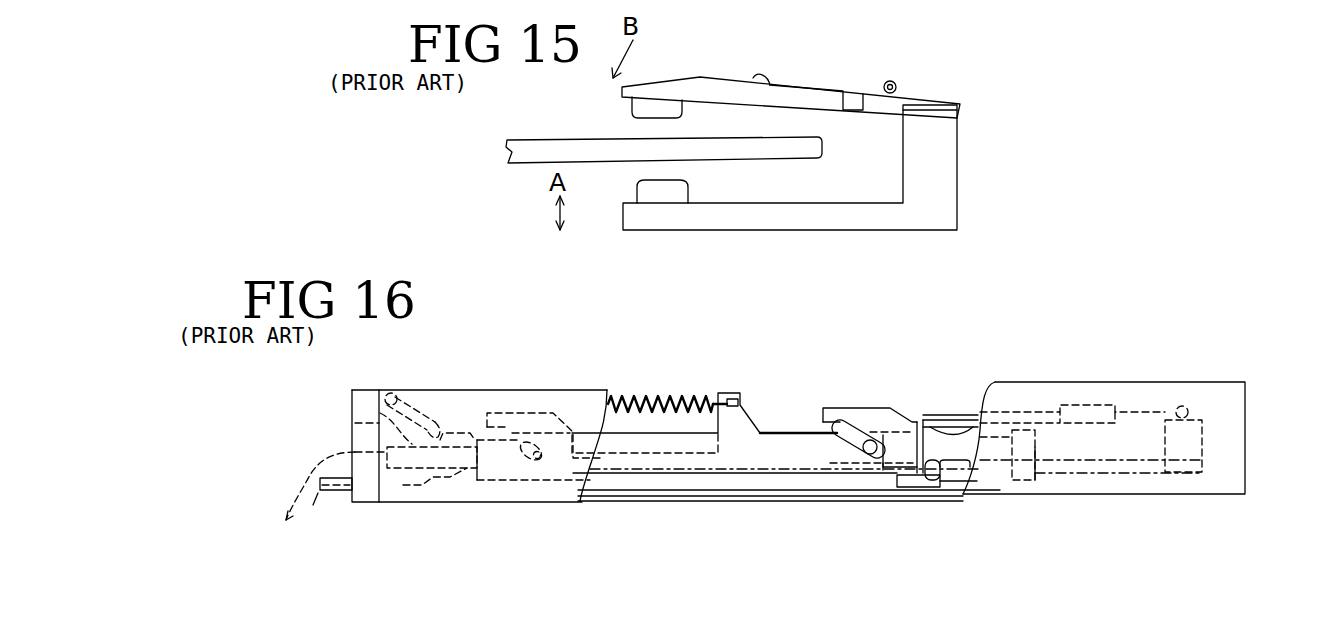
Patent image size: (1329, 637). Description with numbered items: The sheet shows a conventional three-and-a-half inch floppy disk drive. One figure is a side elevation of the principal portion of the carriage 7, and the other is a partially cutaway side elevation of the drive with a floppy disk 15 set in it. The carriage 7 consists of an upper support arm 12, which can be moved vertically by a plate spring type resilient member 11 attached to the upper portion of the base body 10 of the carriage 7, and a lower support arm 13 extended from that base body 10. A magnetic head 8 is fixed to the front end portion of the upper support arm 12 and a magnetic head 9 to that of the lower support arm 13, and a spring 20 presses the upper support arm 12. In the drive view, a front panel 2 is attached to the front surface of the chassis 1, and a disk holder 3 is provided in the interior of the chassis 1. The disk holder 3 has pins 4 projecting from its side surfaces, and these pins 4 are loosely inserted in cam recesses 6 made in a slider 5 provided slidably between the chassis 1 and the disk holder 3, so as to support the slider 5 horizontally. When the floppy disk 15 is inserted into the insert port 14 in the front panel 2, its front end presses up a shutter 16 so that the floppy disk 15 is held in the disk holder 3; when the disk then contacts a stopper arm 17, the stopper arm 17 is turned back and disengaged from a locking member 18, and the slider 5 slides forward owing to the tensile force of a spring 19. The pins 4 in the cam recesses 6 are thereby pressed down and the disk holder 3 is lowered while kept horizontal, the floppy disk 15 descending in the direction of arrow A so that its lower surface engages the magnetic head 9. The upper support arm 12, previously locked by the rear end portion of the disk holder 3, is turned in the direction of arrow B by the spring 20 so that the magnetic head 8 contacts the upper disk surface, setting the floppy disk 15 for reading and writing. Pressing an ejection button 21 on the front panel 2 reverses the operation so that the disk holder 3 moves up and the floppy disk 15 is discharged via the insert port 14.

In FIG. 16, the chassis 1 is at (1210, 381).
In FIG. 16, the front panel 2 is at (350, 494).
In FIG. 16, the disk holder 3 is at (676, 430).
In FIG. 16, the pins 4 is at (517, 440).
In FIG. 16, the slider 5 is at (767, 477).
In FIG. 16, the cam recesses 6 is at (542, 460).
In FIG. 16, the carriage 7 is at (1205, 443).
In FIG. 15, the magnetic head 8 is at (663, 93).
In FIG. 16, the magnetic head 8 is at (925, 425).
In FIG. 15, the magnetic head 9 is at (655, 193).
In FIG. 16, the magnetic head 9 is at (930, 493).
In FIG. 15, the base body 10 is at (940, 148).
In FIG. 16, the base body 10 is at (1165, 445).
In FIG. 15, the resilient member 11 is at (866, 93).
In FIG. 15, the upper support arm 12 is at (770, 100).
In FIG. 16, the upper support arm 12 is at (1023, 410).
In FIG. 15, the lower support arm 13 is at (746, 215).
In FIG. 16, the insert port 14 is at (316, 498).
In FIG. 15, the floppy disk 15 is at (580, 150).
In FIG. 16, the floppy disk 15 is at (377, 418).
In FIG. 16, the shutter 16 is at (427, 420).
In FIG. 16, the stopper arm 17 is at (1035, 447).
In FIG. 16, the locking member 18 is at (897, 489).
In FIG. 16, the spring 19 is at (640, 398).
In FIG. 15, the spring 20 is at (843, 90).
In FIG. 16, the ejection button 21 is at (318, 512).